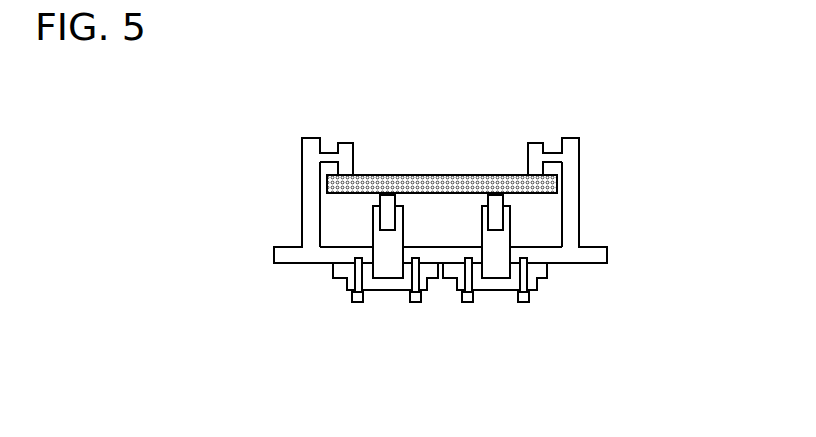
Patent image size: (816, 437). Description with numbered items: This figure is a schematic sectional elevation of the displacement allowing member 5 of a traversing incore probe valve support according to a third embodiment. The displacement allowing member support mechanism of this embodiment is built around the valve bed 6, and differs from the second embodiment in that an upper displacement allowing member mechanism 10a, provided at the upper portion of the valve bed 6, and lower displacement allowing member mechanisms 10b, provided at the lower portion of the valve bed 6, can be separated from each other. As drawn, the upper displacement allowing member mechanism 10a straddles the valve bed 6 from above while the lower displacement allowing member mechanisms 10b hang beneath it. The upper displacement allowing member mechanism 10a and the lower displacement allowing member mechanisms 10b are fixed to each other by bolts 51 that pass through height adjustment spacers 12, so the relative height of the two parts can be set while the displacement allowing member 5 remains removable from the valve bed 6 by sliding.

The displacement allowing member 5 is at (490, 247).
The valve bed 6 is at (432, 175).
The upper displacement allowing member mechanism 10a is at (570, 180).
The lower displacement allowing member mechanism 10b is at (382, 277).
The height adjustment spacer 12 is at (351, 272).
The bolt 51 is at (355, 302).